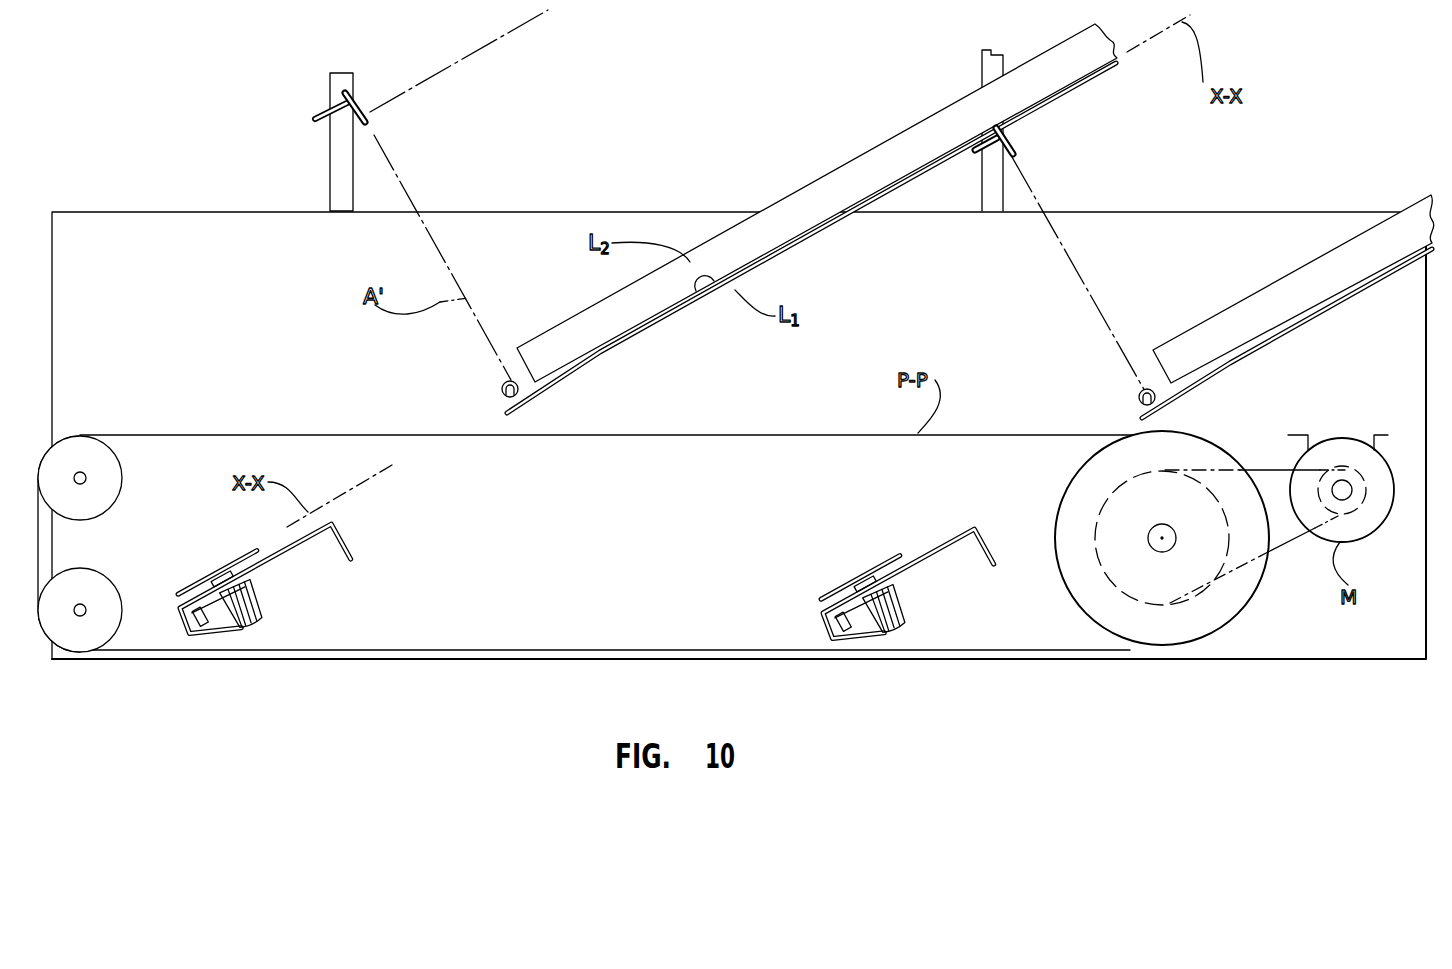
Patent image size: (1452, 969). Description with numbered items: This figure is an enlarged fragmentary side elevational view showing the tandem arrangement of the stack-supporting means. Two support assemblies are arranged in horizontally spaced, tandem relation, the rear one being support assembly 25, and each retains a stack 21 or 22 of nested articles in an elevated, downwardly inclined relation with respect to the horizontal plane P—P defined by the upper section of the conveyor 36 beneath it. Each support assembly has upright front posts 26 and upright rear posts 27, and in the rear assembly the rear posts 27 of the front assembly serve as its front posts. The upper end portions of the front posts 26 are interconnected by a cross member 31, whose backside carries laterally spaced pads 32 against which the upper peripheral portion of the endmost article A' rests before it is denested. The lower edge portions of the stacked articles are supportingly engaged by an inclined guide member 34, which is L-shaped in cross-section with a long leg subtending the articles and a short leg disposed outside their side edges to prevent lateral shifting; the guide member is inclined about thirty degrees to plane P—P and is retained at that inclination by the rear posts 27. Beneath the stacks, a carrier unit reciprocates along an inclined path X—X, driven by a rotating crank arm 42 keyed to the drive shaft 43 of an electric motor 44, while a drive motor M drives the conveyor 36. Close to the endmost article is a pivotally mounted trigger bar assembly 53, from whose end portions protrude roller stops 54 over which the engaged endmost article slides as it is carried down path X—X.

The stack 21 is at (500, 38).
The stack 22 is at (1082, 287).
The support assembly 25 is at (976, 62).
The front posts 26 is at (347, 160).
The rear posts 27 is at (1002, 191).
The cross member 31 is at (320, 110).
The pads 32 is at (352, 98).
The guide member 34 is at (897, 124).
The conveyor 36 is at (790, 440).
The crank arm 42 is at (898, 553).
The drive shaft 43 is at (852, 582).
The electric motor 44 is at (905, 592).
The trigger bar assembly 53 is at (545, 402).
The stops 54 is at (502, 388).